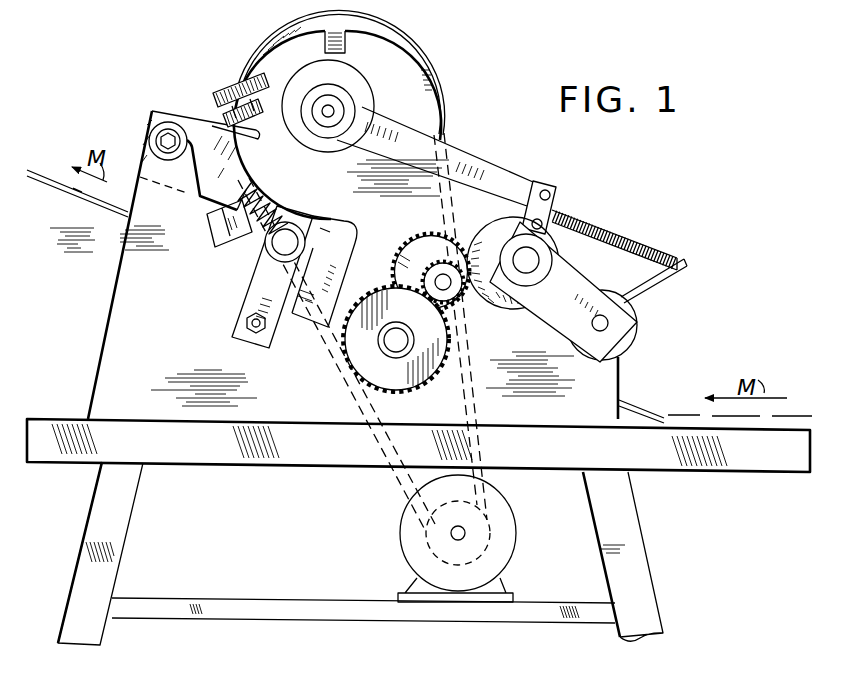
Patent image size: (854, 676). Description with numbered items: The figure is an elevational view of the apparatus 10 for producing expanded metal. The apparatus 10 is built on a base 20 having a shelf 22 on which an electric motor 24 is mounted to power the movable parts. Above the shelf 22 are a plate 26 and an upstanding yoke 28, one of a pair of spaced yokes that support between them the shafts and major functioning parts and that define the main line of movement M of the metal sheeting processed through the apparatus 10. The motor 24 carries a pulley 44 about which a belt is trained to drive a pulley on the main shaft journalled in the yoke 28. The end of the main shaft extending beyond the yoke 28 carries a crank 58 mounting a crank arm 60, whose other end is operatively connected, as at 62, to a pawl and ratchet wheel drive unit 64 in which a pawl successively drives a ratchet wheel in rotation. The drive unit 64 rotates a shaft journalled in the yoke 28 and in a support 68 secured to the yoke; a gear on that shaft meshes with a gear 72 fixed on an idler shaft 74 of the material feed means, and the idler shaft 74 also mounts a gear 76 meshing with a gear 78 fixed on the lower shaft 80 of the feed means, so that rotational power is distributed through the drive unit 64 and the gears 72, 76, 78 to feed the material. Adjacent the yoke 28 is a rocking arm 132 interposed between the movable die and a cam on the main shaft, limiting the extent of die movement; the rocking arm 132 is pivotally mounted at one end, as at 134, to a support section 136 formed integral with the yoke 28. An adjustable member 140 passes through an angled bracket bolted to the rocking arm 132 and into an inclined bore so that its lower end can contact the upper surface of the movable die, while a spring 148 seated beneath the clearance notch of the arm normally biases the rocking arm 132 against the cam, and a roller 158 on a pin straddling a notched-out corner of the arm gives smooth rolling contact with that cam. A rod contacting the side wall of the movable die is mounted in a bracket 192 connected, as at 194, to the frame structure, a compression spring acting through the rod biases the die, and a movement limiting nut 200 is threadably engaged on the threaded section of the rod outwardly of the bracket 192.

The apparatus 10 is at (510, 151).
The base 20 is at (670, 582).
The shelf 22 is at (570, 588).
The electric motor 24 is at (517, 520).
The plate 26 is at (752, 465).
The yoke 28 is at (190, 314).
The pulley of the motor 44 is at (430, 520).
The crank 58 is at (367, 100).
The crank arm 60 is at (518, 178).
The operative connection 62 is at (560, 230).
The pawl and ratchet wheel drive unit 64 is at (583, 260).
The support 68 is at (551, 307).
The gear 72 is at (428, 238).
The idler shaft 74 is at (466, 312).
The gear 76 is at (403, 267).
The gear 78 is at (422, 387).
The lower shaft 80 is at (393, 347).
The rocking arm 132 is at (158, 110).
The pivotal mounting 134 is at (172, 128).
The support section 136 is at (147, 160).
The adjustable member 140 is at (278, 72).
The spring 148 is at (260, 210).
The cam follower 158 is at (218, 93).
The bracket 192 is at (272, 323).
The connection 194 is at (232, 335).
The movement limiting nut 200 is at (278, 248).